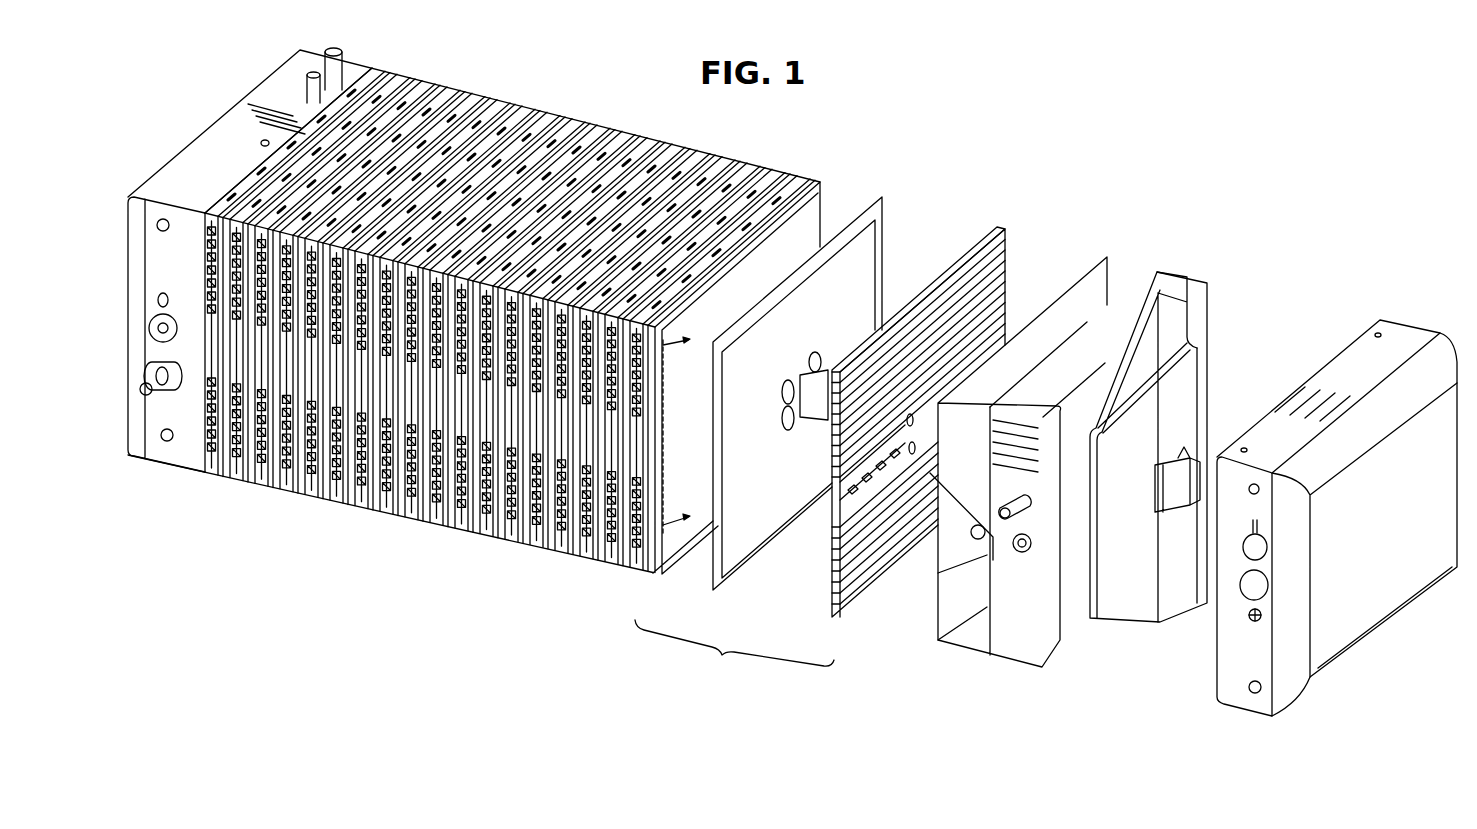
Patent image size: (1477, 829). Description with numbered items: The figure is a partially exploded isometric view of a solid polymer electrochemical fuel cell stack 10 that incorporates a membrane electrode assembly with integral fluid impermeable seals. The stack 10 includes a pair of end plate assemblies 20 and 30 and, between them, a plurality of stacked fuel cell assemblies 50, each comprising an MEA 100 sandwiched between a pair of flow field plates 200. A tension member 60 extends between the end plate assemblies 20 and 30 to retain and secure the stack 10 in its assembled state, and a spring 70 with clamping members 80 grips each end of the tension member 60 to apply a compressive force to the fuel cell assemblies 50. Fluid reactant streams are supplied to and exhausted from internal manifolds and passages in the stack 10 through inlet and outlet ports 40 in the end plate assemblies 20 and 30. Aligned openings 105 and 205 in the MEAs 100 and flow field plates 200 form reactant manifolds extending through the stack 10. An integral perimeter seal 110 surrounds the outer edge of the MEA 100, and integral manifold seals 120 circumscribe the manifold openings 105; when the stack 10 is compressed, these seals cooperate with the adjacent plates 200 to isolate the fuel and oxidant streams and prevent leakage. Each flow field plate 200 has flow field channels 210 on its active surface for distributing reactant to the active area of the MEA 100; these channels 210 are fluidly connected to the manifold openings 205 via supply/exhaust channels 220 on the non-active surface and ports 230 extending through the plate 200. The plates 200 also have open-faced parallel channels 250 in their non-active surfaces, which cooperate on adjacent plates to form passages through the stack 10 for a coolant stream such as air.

The fuel cell stack 10 is at (1093, 183).
The end plate assembly 20 is at (1007, 683).
The end plate assembly 30 is at (623, 380).
The inlet and outlet ports 40 is at (178, 370).
The fuel cell assembly 50 is at (734, 657).
The tension member 60 is at (1213, 453).
The spring 70 is at (1196, 479).
The clamping members 80 is at (1185, 540).
The membrane electrode assembly 100 is at (873, 230).
The manifold openings 105 is at (818, 355).
The integral perimeter seal 110 is at (846, 346).
The integral manifold seals 120 is at (792, 405).
The flow field plate 200 is at (912, 395).
The manifold openings 205 is at (918, 460).
The flow field channels 210 is at (667, 488).
The supply/exhaust channels 220 is at (852, 468).
The ports 230 is at (667, 449).
The open-faced parallel channels 250 is at (337, 497).